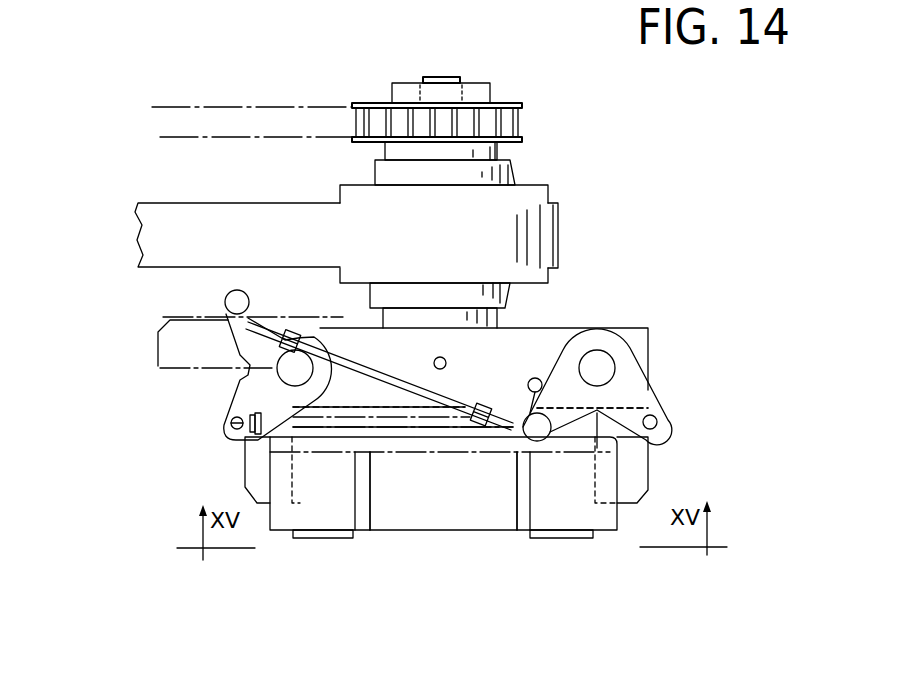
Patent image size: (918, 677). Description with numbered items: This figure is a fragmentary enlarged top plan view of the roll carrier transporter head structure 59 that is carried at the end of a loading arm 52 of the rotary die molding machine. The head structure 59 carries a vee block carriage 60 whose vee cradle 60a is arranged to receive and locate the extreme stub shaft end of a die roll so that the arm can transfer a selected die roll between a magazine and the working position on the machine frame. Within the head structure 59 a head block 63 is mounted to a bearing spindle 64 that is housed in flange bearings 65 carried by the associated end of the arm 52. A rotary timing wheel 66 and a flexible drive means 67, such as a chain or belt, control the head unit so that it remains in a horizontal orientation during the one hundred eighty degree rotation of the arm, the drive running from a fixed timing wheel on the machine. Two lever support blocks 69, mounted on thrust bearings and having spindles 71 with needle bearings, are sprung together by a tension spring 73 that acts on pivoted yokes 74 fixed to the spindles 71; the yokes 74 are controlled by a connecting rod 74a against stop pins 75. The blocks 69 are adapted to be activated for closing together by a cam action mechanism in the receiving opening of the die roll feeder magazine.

The support arm 52 is at (190, 215).
The roll carrier transporter head structure 59 is at (692, 347).
The vee block carriage 60 is at (328, 510).
The vee cradle 60a is at (418, 523).
The head block 63 is at (638, 338).
The bearing spindle 64 is at (457, 72).
The flange bearings 65 is at (517, 195).
The rotary timing wheel 66 is at (503, 122).
The flexible drive means 67 is at (212, 133).
The lever support blocks 69 is at (258, 457).
The spindles 71 is at (278, 365).
The tension spring 73 is at (330, 425).
The pivoted yokes 74 is at (250, 383).
The connecting rod 74a is at (437, 390).
The stop pins 75 is at (535, 392).